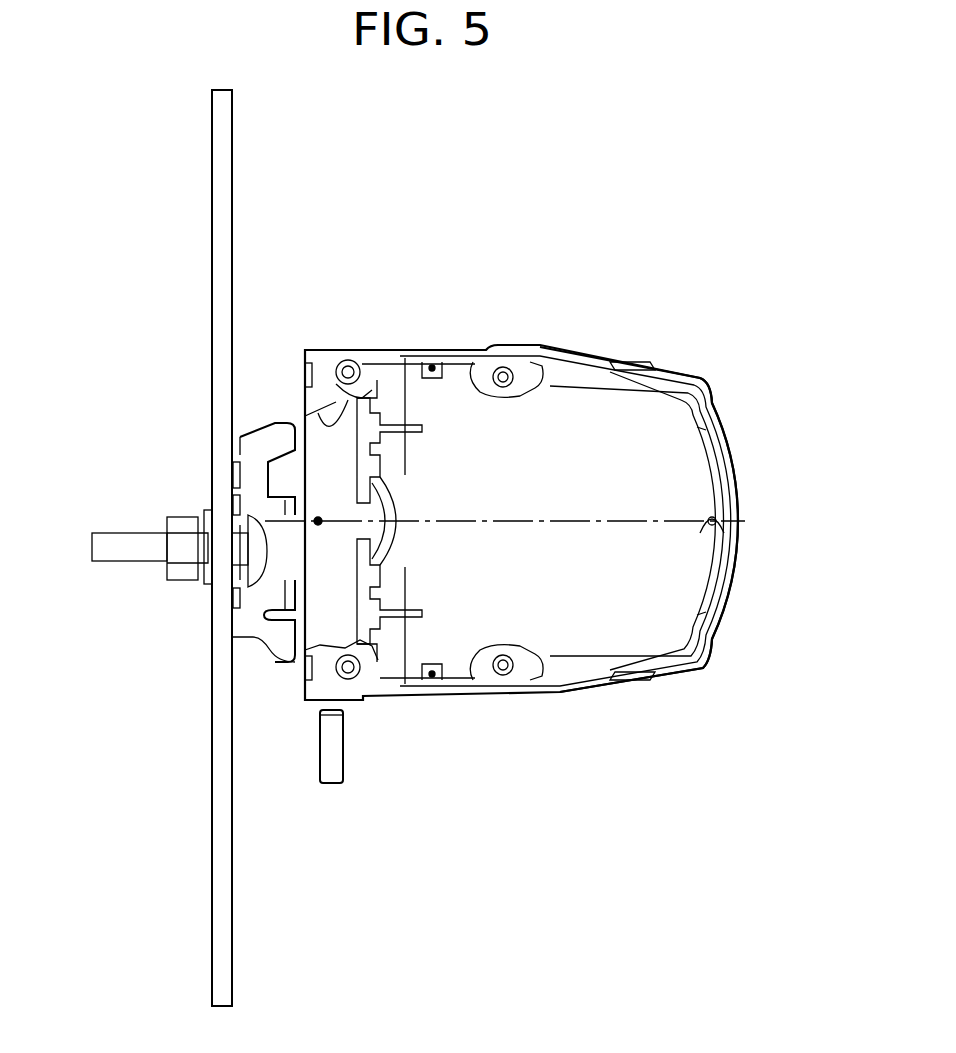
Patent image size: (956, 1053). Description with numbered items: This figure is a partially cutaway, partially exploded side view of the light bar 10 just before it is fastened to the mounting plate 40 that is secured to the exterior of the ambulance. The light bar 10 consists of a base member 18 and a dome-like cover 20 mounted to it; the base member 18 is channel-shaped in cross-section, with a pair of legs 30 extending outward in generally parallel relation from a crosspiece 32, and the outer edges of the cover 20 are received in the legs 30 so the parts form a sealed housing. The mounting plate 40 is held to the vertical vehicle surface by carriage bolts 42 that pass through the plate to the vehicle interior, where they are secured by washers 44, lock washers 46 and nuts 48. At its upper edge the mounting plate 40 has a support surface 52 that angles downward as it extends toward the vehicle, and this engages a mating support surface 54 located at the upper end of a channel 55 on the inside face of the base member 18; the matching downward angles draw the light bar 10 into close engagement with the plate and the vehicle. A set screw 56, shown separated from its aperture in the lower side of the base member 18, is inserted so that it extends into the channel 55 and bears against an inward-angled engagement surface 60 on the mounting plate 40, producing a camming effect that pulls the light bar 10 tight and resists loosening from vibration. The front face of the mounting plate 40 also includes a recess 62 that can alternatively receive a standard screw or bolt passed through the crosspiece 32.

The light bar 10 is at (762, 497).
The base member 18 is at (246, 132).
The cover 20 is at (715, 410).
The legs 30 is at (434, 372).
The crosspiece 32 is at (368, 462).
The mounting plate 40 is at (270, 425).
The carriage bolts 42 is at (117, 548).
The washers 44 is at (233, 590).
The lock washers 46 is at (190, 512).
The nuts 48 is at (205, 520).
The support surface 52 is at (258, 445).
The mating support surface 54 is at (352, 398).
The channel 55 is at (330, 613).
The set screws 56 is at (337, 750).
The engagement surface 60 is at (266, 643).
The recess 62 is at (275, 612).